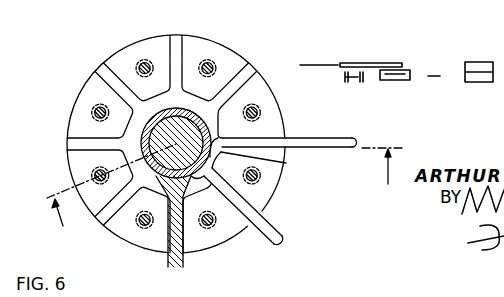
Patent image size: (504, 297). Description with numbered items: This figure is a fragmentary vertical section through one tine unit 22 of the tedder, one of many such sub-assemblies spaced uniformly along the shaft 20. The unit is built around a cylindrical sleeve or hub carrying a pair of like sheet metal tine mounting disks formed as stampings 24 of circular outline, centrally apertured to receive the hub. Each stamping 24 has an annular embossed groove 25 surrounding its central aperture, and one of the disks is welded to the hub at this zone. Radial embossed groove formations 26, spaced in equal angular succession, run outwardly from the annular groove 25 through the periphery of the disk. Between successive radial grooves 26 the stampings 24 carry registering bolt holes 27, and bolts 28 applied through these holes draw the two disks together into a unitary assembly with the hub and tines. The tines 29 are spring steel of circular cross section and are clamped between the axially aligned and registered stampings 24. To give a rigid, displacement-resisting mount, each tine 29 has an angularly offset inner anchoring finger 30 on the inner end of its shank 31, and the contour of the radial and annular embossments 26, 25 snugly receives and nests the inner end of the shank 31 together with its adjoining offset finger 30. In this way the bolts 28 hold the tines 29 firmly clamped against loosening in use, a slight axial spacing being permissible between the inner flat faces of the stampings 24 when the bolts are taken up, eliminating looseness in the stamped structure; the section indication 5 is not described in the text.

The section line 5- 5 is at (220, 186).
The shaft 20 is at (168, 140).
The tine unit 22 is at (262, 68).
The stamping 24 is at (263, 195).
The annular embossed groove 25 is at (268, 98).
The radial embossed groove formation 26 is at (117, 83).
The bolt hole 27 is at (146, 60).
The bolt 28 is at (137, 66).
The tine 29 is at (323, 135).
The anchoring finger 30 is at (286, 163).
The shank 31 is at (343, 149).